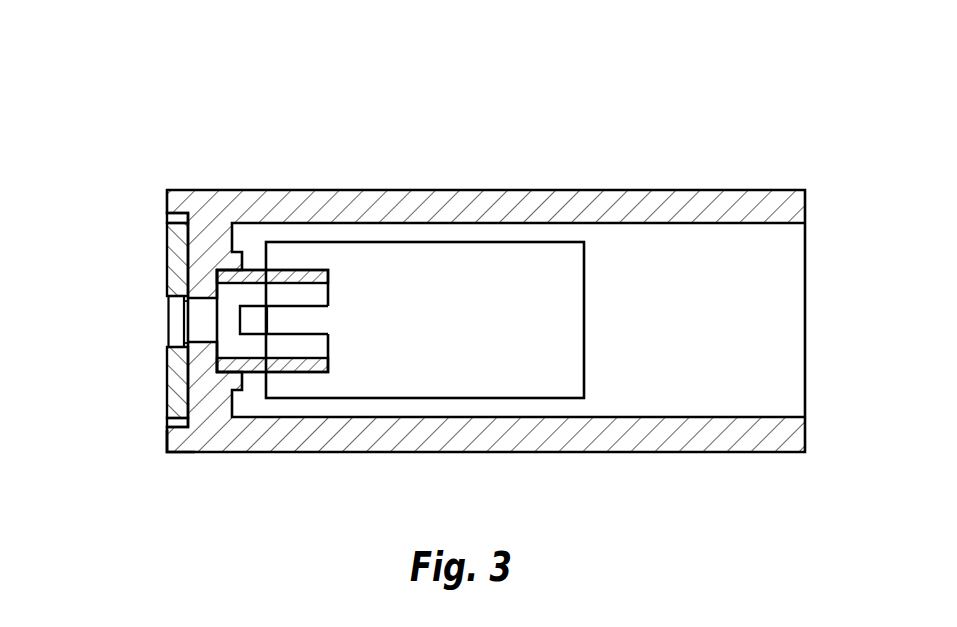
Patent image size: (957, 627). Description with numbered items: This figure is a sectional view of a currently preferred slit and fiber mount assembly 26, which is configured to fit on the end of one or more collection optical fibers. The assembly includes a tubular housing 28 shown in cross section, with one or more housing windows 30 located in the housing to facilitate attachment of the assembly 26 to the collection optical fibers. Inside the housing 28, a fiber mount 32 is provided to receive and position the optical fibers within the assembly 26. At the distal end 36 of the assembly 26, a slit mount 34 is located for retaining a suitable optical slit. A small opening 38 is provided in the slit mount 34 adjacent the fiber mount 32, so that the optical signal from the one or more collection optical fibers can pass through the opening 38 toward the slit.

The slit and fiber mount assembly 26 is at (307, 100).
The tubular housing 28 is at (563, 198).
The housing window 30 is at (466, 334).
The fiber mount 32 is at (303, 372).
The slit mount 34 is at (168, 382).
The distal end 36 is at (175, 453).
The small opening 38 is at (173, 310).